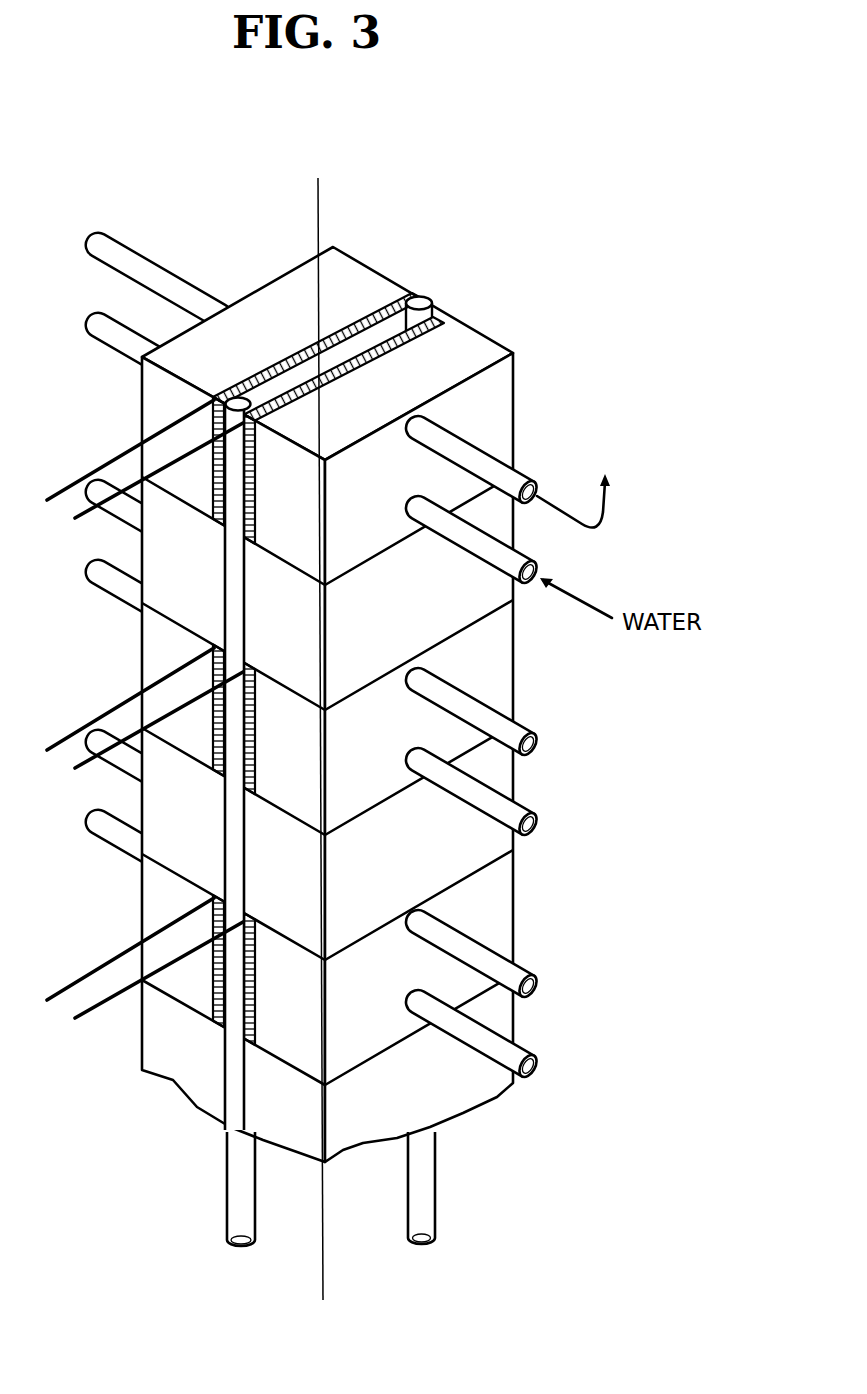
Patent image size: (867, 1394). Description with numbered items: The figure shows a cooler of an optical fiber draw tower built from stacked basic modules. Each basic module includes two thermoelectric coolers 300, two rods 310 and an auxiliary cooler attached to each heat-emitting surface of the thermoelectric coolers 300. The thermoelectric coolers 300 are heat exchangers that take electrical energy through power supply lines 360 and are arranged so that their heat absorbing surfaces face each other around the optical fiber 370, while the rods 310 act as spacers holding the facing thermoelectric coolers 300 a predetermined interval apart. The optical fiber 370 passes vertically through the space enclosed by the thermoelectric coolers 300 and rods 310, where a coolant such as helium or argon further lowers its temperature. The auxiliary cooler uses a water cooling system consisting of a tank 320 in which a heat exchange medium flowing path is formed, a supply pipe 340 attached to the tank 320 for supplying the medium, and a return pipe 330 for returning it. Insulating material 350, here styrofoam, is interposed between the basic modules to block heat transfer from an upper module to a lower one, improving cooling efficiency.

The thermoelectric cooler 300 is at (353, 312).
The rod 310 is at (419, 297).
The tank 320 is at (298, 283).
The return pipe 330 is at (491, 464).
The supply pipe 340 is at (505, 557).
The insulating material 350 is at (450, 613).
The power supply line 360 is at (130, 483).
The optical fiber 370 is at (318, 180).